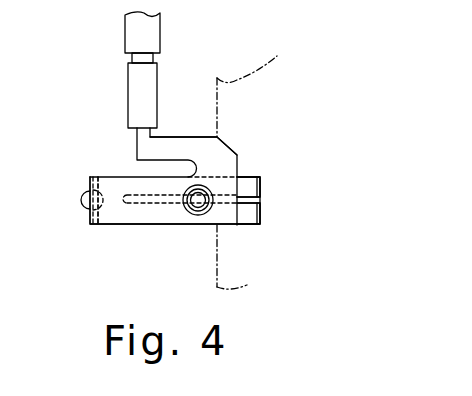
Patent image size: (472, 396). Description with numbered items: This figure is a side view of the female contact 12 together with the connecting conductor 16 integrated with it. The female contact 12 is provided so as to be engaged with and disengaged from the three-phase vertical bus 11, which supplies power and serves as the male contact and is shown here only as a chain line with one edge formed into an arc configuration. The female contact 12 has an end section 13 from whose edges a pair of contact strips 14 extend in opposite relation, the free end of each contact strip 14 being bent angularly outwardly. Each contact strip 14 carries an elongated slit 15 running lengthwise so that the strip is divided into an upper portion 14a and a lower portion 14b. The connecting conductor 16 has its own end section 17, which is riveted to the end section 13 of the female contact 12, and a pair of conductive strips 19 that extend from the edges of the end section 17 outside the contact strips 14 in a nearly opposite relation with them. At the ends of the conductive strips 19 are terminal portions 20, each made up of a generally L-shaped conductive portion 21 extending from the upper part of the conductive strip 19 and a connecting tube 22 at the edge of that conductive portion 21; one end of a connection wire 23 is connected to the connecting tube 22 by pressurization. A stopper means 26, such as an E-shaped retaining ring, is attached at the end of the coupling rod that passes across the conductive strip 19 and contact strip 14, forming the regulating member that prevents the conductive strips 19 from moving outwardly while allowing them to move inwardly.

The vertical bus 11 is at (259, 165).
The female contact 12 is at (291, 189).
The end section 13 is at (88, 183).
The contact strip 14 is at (250, 226).
The upper portion 14a is at (252, 190).
The lower portion 14b is at (260, 208).
The elongated slit 15 is at (153, 200).
The connecting conductor 16 is at (141, 236).
The end section 17 is at (90, 215).
The conductive strip 19 is at (115, 213).
The terminal portion 20 is at (174, 112).
The conductive portion 21 is at (192, 148).
The connecting tube 22 is at (138, 100).
The connection wire 23 is at (133, 32).
The stopper means 26 is at (198, 200).